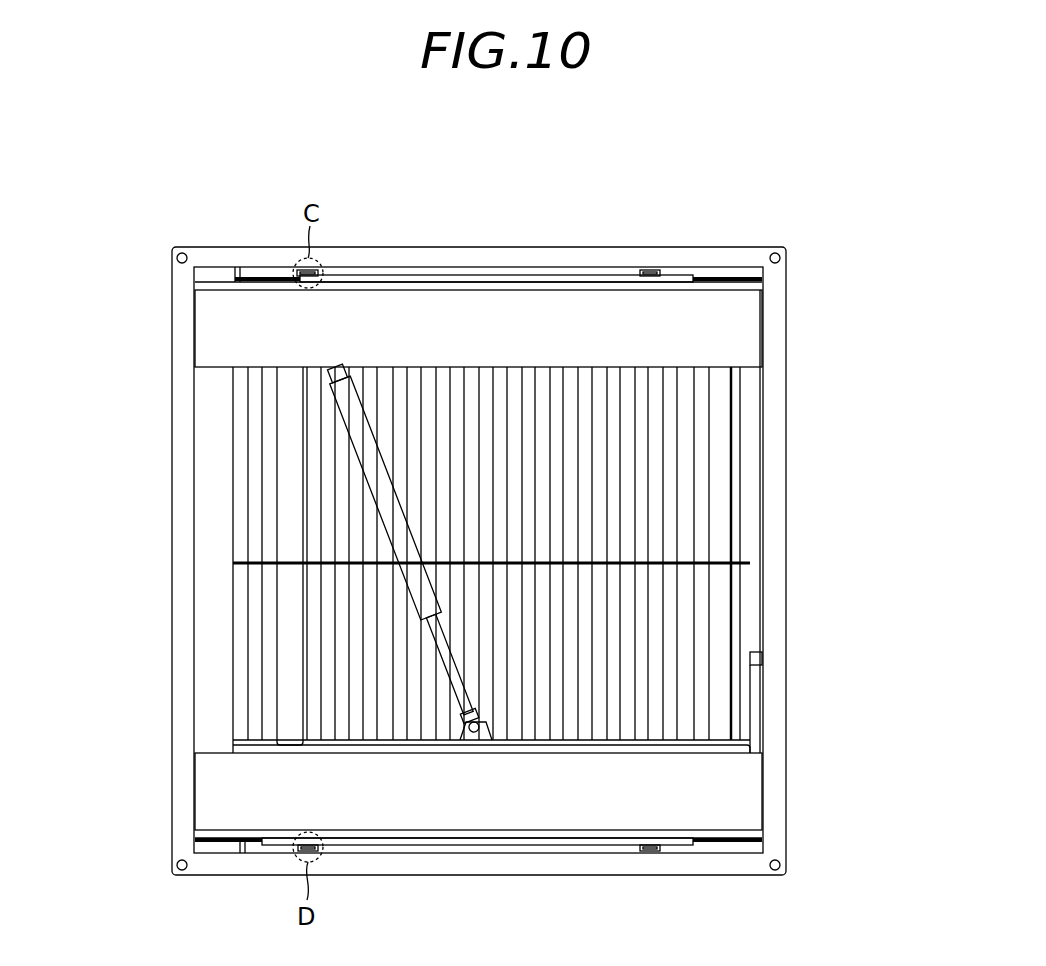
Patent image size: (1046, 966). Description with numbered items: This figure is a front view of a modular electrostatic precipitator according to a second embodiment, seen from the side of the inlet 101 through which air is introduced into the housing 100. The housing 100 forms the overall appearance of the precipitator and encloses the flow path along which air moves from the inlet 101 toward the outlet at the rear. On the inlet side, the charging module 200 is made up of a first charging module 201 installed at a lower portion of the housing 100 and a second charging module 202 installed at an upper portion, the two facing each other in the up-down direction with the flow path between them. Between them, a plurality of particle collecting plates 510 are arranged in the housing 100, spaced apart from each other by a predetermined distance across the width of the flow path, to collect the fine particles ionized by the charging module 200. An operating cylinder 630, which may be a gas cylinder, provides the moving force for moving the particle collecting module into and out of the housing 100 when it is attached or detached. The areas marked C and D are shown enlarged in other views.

The housing 100 is at (641, 253).
The inlet 101 is at (198, 424).
The charging module 200 is at (578, 560).
The first charging module 201 is at (544, 728).
The second charging module 202 is at (745, 343).
The particle collecting plate 510 is at (318, 490).
The operating cylinder 630 is at (422, 588).